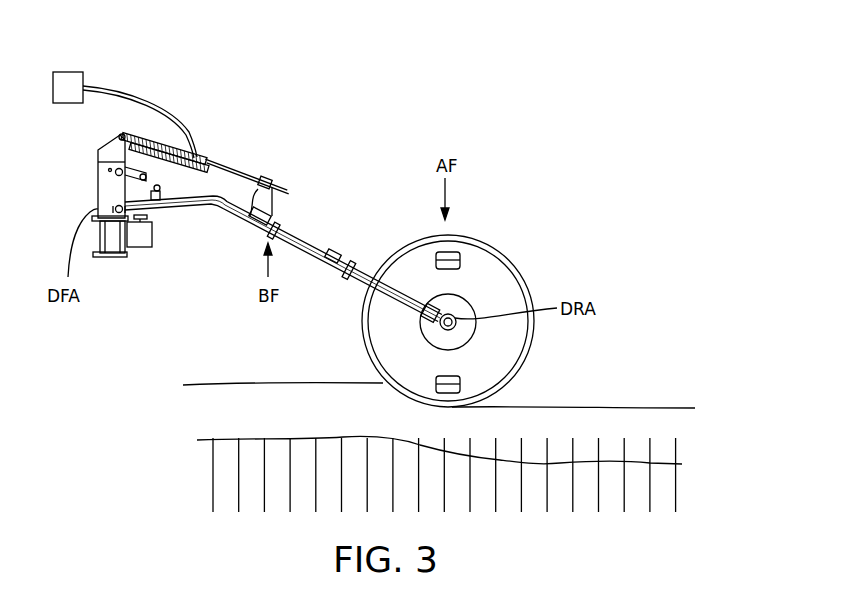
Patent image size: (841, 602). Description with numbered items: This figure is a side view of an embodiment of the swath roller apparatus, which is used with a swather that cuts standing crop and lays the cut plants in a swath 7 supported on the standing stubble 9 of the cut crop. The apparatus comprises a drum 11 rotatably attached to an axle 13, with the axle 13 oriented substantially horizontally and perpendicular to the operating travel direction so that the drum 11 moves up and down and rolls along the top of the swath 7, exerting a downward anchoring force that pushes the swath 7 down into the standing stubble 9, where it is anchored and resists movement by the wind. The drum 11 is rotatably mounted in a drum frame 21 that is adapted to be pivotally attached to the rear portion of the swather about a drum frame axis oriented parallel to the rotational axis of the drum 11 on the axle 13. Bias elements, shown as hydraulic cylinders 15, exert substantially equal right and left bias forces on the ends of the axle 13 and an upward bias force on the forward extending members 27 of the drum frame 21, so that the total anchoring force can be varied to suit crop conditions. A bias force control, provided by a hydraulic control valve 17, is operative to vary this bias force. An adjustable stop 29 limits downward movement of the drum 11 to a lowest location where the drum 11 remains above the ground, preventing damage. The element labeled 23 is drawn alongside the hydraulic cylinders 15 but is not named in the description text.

The swath 7 is at (617, 407).
The standing stubble 9 is at (678, 492).
The drum 11 is at (516, 262).
The axle 13 is at (440, 325).
The hydraulic cylinders 15 is at (207, 161).
The hydraulic control valve 17 is at (68, 72).
The drum frame 21 is at (353, 280).
The spring 23 is at (205, 158).
The forward extending members 27 is at (303, 230).
The adjustable stop 29 is at (147, 219).